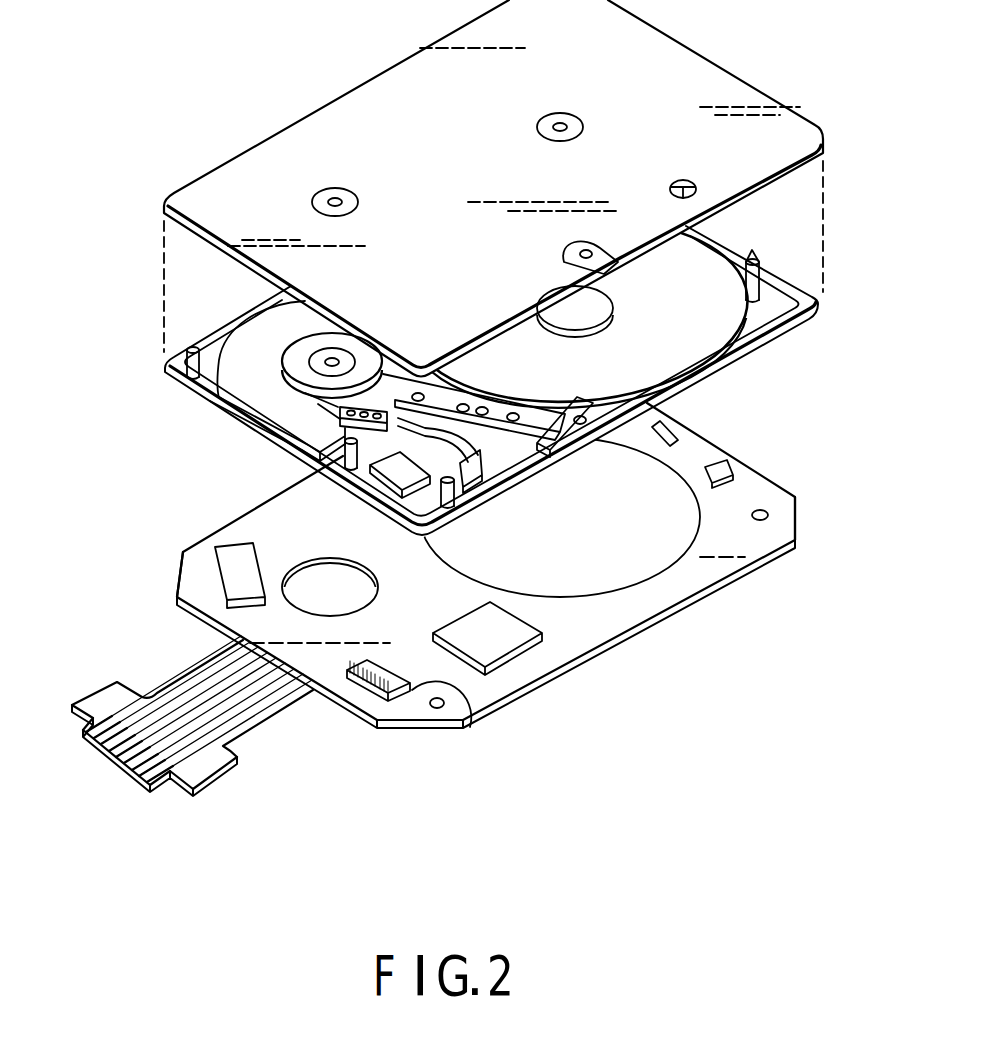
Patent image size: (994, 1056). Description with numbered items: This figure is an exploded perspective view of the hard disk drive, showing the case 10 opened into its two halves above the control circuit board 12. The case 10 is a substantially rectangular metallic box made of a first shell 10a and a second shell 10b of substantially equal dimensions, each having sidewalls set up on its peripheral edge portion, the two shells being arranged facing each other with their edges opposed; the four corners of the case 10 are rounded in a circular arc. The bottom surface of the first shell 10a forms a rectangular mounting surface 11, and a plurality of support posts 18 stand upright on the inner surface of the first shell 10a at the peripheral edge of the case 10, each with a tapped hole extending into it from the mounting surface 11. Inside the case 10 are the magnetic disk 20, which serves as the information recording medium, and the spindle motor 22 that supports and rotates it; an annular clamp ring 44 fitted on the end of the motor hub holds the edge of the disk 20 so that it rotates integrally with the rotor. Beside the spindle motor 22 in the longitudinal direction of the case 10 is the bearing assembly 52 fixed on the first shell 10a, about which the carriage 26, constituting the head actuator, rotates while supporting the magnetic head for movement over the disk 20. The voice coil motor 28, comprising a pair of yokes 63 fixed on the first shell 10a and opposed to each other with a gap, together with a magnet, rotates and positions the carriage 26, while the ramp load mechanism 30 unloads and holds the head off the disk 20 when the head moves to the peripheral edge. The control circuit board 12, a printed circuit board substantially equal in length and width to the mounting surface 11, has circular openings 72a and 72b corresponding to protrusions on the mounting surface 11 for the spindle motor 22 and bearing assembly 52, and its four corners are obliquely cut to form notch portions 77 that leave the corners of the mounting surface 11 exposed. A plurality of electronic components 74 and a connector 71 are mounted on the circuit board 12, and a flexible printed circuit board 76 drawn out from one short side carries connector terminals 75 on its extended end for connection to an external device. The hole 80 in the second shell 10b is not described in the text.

The case 10 is at (268, 105).
The first shell 10a is at (790, 348).
The second shell 10b is at (722, 77).
The mounting surface 11 is at (232, 432).
The control circuit board 12 is at (620, 623).
The support posts 18 is at (768, 264).
The magnetic disk 20 is at (695, 352).
The spindle motor 22 is at (630, 305).
The carriage 26 is at (440, 394).
The voice coil motor 28 is at (250, 345).
The ramp load mechanism 30 is at (572, 432).
The clamp ring 44 is at (592, 318).
The bearing assembly 52 is at (340, 350).
The yokes 63 is at (240, 388).
The connector 71 is at (455, 712).
The circular opening 72a is at (655, 563).
The circular opening 72b is at (320, 580).
The electronic components 74 is at (735, 471).
The connector terminals 75 is at (112, 756).
The flexible printed circuit board 76 is at (268, 708).
The notch portions 77 is at (812, 524).
The breathing hole 80 is at (686, 181).